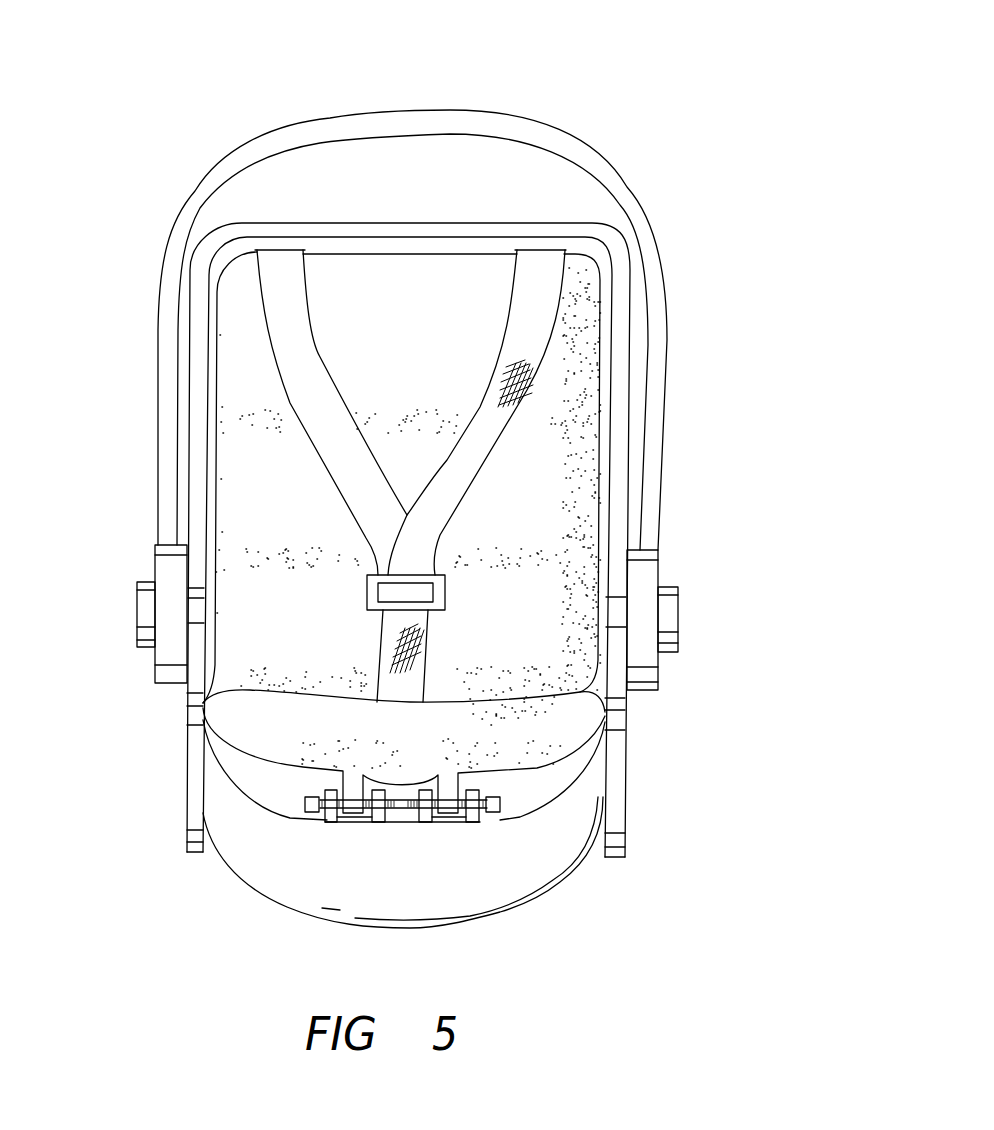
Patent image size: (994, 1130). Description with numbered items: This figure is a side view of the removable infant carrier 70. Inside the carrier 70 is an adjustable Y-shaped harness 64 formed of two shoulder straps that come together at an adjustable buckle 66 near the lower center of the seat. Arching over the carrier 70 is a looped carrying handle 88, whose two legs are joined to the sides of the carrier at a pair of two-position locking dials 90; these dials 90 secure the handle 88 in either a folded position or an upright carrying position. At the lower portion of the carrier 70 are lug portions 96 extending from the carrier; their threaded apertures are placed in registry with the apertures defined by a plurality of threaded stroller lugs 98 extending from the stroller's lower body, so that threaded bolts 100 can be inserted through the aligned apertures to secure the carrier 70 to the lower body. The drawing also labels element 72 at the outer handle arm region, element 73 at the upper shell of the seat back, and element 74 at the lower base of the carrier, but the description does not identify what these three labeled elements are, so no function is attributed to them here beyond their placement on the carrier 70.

The removable infant carrier 70 is at (705, 115).
The carrying handle 72 is at (667, 293).
The looped carrying handle 88 is at (480, 163).
The seat back shell 73 is at (221, 238).
The adjustable Y-shaped harness 64 is at (327, 410).
The adjustable buckle 66 is at (447, 592).
The two-position locking dials 90 is at (137, 613).
The lug portions 96 is at (327, 785).
The seat base 74 is at (483, 914).
The threaded stroller lugs 98 is at (504, 835).
The threaded bolts 100 is at (497, 797).